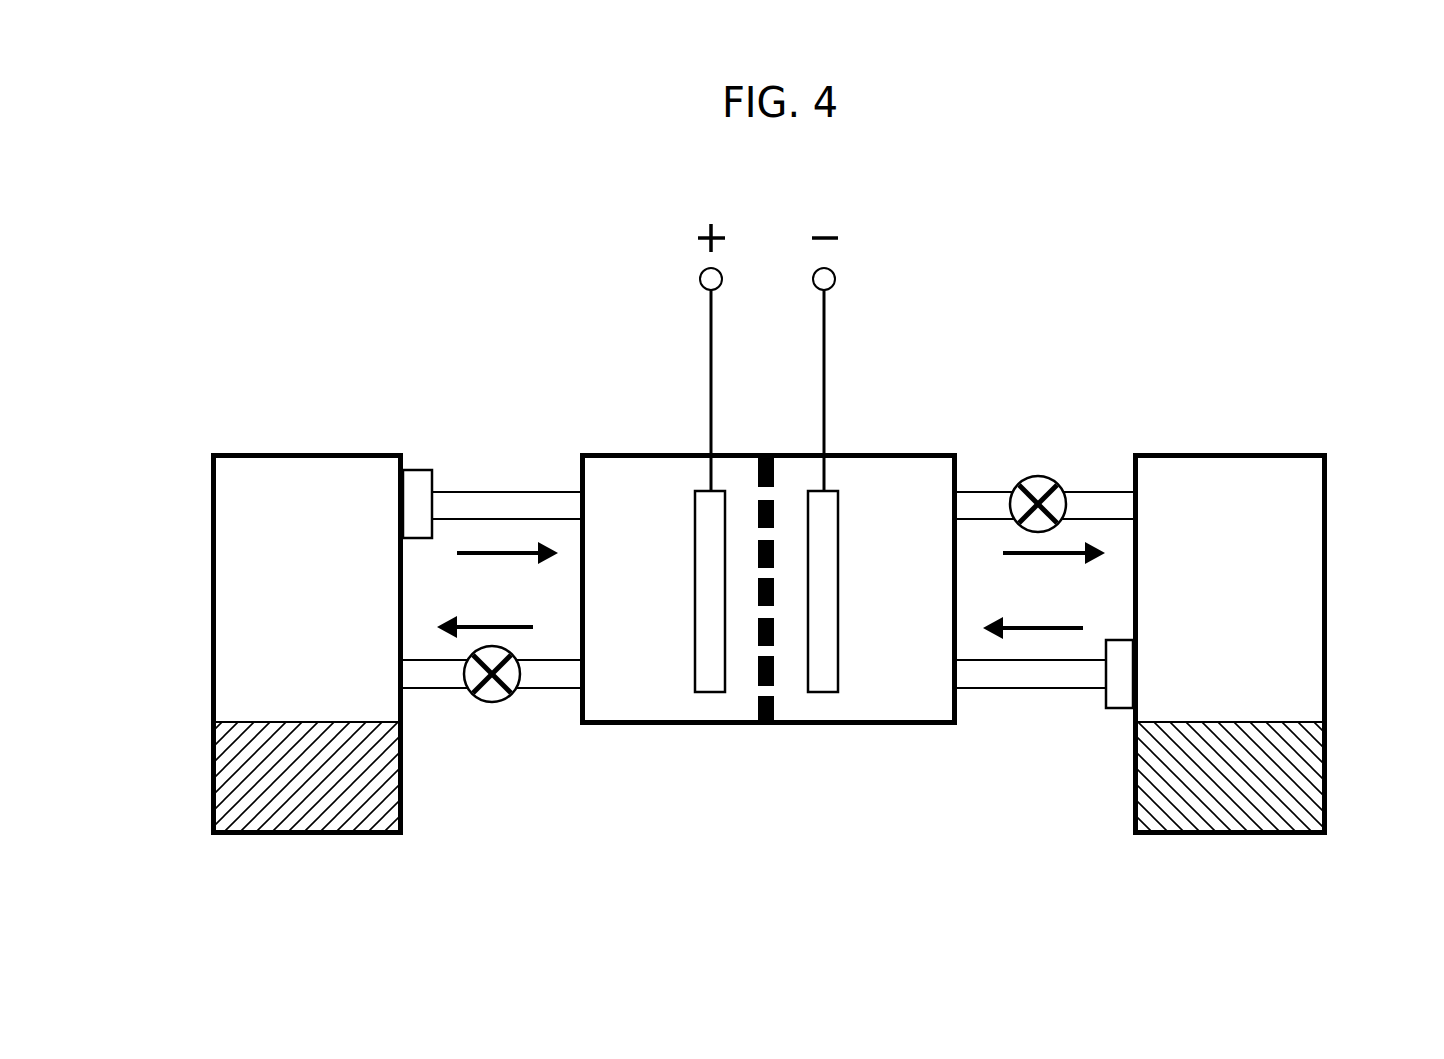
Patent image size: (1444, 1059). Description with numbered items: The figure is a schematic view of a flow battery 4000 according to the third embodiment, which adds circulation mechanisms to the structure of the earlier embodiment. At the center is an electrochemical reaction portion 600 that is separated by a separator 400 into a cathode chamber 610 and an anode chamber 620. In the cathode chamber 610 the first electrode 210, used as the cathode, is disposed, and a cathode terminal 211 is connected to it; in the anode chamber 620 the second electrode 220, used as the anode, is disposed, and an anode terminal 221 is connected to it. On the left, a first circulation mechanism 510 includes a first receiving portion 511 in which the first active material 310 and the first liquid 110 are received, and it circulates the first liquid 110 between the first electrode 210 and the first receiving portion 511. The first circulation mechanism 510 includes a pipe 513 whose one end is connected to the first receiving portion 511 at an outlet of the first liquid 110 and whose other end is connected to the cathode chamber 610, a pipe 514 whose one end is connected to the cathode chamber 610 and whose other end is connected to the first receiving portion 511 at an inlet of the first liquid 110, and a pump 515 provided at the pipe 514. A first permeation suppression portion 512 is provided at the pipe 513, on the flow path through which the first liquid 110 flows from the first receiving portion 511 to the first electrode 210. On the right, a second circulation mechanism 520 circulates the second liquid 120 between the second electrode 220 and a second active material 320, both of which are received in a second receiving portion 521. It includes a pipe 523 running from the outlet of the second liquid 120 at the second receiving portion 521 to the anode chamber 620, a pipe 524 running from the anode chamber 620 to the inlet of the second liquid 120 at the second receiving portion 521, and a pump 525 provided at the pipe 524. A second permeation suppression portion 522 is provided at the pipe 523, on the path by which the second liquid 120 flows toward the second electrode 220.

The flow battery 4000 is at (803, 191).
The first liquid 110 is at (497, 590).
The second liquid 120 is at (1044, 590).
The first electrode 210 is at (707, 690).
The cathode terminal 211 is at (696, 277).
The second electrode 220 is at (820, 690).
The anode terminal 221 is at (836, 270).
The first active material 310 is at (228, 752).
The second active material 320 is at (1312, 757).
The separator 400 is at (773, 452).
The first circulation mechanism 510 is at (347, 402).
The first receiving portion 511 is at (232, 490).
The first permeation suppression portion 512 is at (418, 483).
The pipe 513 is at (502, 500).
The pipe 514 is at (548, 688).
The pump 515 is at (487, 702).
The second circulation mechanism 520 is at (1181, 398).
The second receiving portion 521 is at (1302, 487).
The second permeation suppression portion 522 is at (1113, 705).
The pipe 523 is at (1033, 672).
The pipe 524 is at (987, 502).
The pump 525 is at (1040, 478).
The electrochemical reaction portion 600 is at (908, 728).
The cathode chamber 610 is at (633, 483).
The anode chamber 620 is at (898, 483).